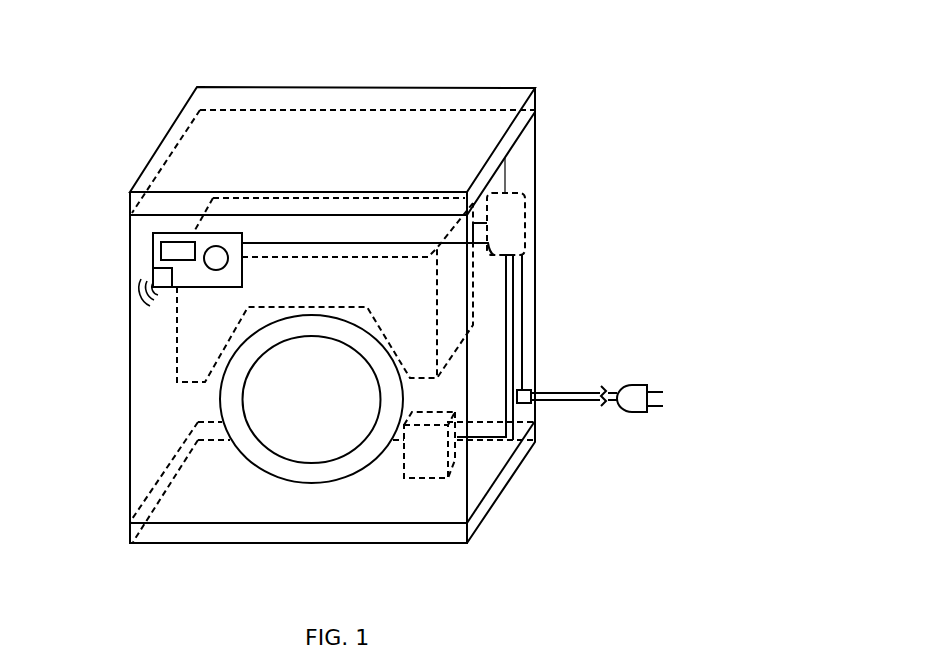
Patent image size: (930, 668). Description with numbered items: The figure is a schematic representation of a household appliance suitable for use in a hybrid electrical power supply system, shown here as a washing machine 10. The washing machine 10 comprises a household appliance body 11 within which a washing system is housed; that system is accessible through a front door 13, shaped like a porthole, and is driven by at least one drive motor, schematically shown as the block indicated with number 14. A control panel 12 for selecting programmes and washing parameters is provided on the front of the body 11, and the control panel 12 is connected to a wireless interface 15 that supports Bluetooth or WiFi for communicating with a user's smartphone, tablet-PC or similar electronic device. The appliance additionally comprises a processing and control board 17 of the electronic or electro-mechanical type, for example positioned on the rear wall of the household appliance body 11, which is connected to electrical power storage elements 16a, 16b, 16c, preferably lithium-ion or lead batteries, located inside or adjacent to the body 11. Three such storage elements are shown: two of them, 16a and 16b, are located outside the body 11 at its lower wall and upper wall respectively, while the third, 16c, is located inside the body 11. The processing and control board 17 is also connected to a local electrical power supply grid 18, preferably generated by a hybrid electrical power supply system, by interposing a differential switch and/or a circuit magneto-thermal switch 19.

The washing machine 10 is at (163, 58).
The household appliance body 11 is at (527, 163).
The control panel 12 is at (158, 240).
The front door 13 is at (283, 422).
The drive motor 14 is at (428, 455).
The wireless interface 15 is at (165, 278).
The electrical power storage element 16a is at (162, 535).
The electrical power storage element 16b is at (490, 96).
The electrical power storage element 16c is at (190, 360).
The processing and control board 17 is at (507, 230).
The local electrical power supply grid 18 is at (570, 390).
The differential switch and/or circuit magneto-thermal switch 19 is at (527, 392).